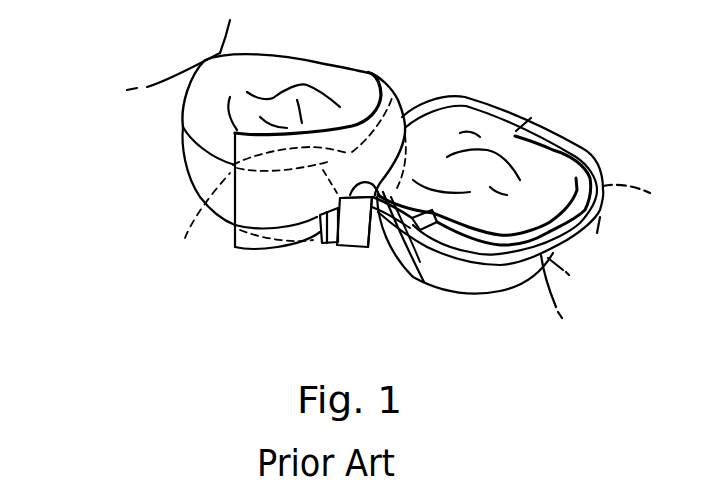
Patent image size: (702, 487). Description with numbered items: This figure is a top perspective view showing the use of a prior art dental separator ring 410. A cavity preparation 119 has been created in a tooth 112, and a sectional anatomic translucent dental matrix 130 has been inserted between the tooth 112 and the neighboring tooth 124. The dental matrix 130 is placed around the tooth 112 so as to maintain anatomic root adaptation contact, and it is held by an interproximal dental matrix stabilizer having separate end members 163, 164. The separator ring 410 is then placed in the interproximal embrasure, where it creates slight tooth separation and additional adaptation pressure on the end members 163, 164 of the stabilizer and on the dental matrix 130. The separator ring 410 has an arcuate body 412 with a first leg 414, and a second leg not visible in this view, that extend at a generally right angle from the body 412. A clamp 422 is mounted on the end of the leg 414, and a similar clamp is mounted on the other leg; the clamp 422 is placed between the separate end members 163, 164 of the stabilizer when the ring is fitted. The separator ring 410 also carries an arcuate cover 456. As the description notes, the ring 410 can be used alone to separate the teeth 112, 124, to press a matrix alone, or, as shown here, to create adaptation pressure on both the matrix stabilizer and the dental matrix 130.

The tooth 112 is at (161, 118).
The cavity preparation 119 is at (188, 222).
The tooth 124 is at (485, 283).
The sectional anatomic translucent dental matrix 130 is at (408, 96).
The end member 163 is at (338, 200).
The end member 164 is at (370, 240).
The dental separator ring 410 is at (507, 101).
The arcuate body 412 is at (424, 282).
The first leg 414 is at (369, 143).
The clamp 422 is at (350, 247).
The arcuate cover 456 is at (572, 235).